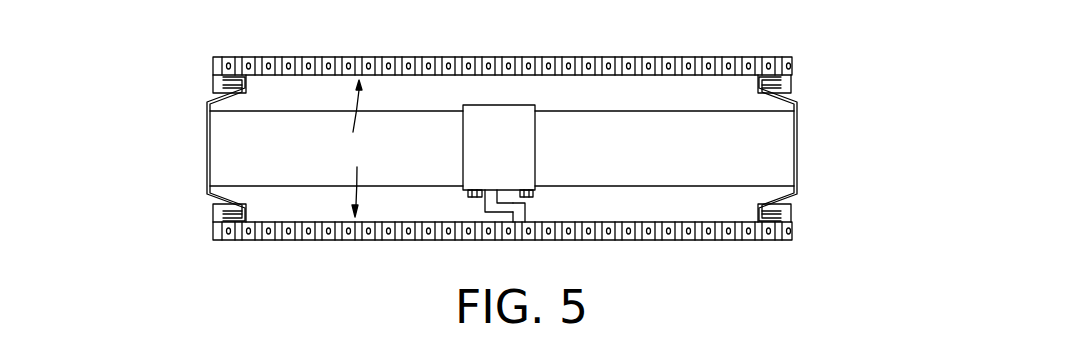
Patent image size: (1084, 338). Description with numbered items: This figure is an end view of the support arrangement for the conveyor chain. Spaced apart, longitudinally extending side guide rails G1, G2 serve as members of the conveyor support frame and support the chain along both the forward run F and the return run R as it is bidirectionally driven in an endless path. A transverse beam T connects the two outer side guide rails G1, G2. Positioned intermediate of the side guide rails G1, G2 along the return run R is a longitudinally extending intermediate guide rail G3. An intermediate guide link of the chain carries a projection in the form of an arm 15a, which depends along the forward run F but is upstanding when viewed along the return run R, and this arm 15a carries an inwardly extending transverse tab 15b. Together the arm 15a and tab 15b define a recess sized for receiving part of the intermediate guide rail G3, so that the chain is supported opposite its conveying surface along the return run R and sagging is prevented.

The guide rail G1 is at (208, 166).
The guide rail G2 is at (798, 188).
The intermediate guide rail G3 is at (492, 193).
The transverse beam T is at (672, 118).
The forward run F is at (349, 106).
The return run R is at (344, 192).
The arm 15a is at (528, 213).
The transverse tab 15b is at (512, 190).